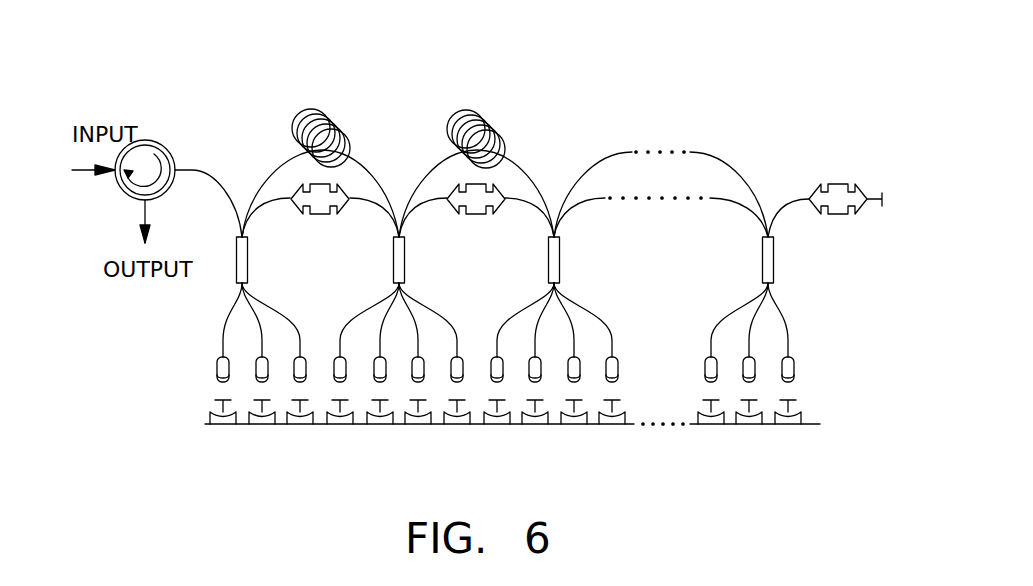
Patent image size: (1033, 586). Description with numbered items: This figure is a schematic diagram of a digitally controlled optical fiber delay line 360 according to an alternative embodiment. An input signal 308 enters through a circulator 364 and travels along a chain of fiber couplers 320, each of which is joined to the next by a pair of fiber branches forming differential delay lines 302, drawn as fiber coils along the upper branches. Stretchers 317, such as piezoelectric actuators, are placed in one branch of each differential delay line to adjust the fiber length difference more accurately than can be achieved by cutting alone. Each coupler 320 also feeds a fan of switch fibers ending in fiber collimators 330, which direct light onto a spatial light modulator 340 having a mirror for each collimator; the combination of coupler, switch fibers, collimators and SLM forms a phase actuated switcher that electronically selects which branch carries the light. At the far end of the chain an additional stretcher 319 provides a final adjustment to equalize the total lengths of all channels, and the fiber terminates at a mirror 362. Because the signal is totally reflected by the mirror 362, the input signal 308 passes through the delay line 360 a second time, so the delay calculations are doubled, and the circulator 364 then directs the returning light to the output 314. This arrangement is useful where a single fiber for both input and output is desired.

The digitally controlled delay line 360 is at (212, 45).
The circulator 364 is at (150, 141).
The input signal 308 is at (82, 170).
The output 314 is at (148, 210).
The differential delay lines 302 is at (445, 123).
The stretchers 317 is at (314, 215).
The additional stretcher 319 is at (838, 215).
The mirror 362 is at (880, 197).
The fiber couplers 320 is at (539, 259).
The fiber collimators 330 is at (212, 367).
The spatial light modulator 340 is at (360, 424).